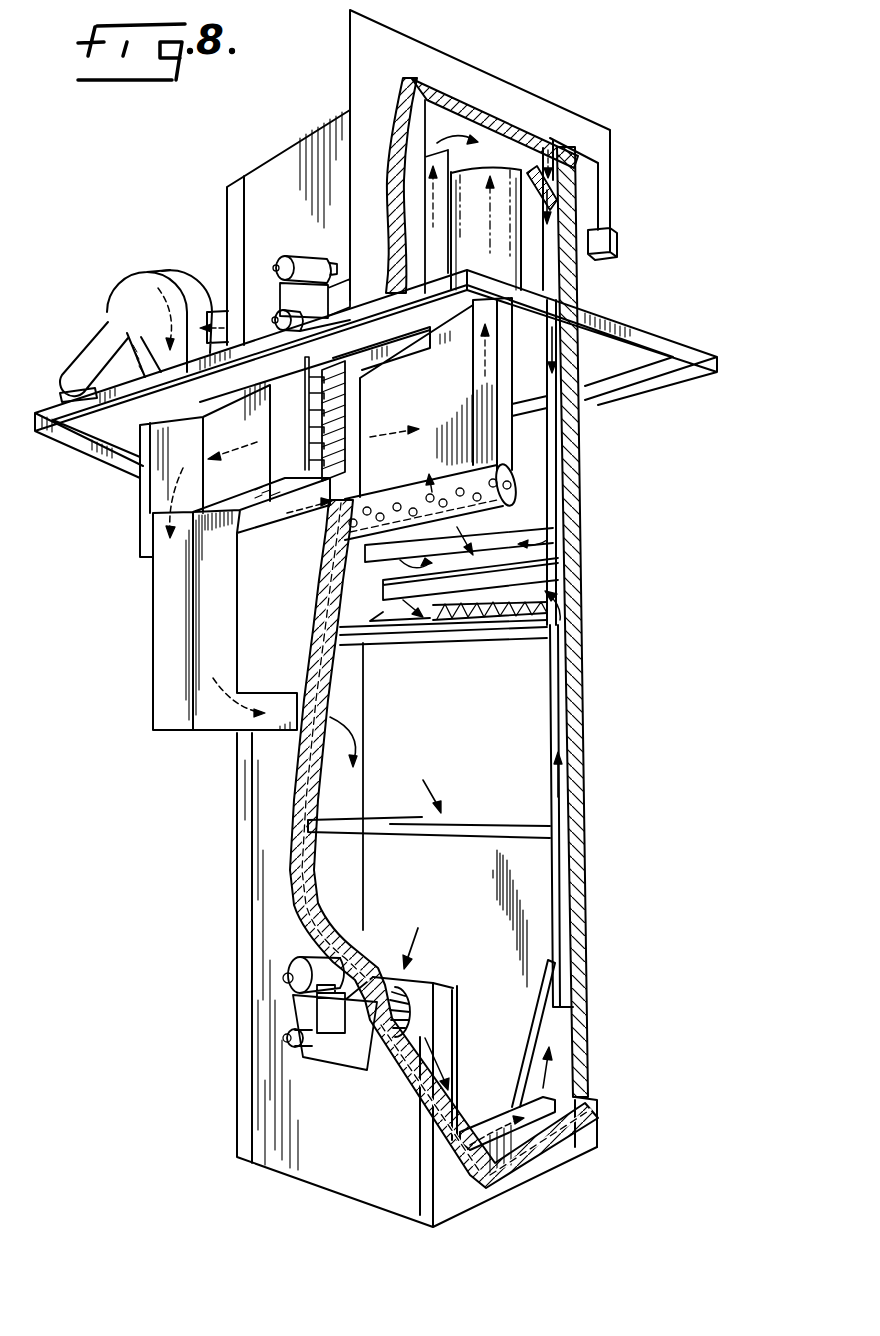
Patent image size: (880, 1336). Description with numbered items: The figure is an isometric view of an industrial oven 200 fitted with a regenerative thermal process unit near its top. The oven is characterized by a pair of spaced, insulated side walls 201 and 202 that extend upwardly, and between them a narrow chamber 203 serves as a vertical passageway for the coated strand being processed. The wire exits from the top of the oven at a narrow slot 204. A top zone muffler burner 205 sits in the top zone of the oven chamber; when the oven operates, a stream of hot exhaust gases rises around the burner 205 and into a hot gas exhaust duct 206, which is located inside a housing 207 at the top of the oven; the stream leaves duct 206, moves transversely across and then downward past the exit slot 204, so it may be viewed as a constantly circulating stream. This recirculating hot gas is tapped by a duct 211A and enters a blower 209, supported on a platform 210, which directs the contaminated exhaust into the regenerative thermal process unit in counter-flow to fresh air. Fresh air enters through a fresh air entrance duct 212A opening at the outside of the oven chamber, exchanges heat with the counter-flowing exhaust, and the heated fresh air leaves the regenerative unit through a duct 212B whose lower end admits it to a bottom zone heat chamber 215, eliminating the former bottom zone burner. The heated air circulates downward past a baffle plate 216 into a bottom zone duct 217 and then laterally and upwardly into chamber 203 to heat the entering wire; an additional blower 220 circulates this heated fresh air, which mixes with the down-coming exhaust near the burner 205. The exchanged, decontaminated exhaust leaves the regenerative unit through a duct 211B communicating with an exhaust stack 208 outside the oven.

The oven 200 is at (597, 634).
The side wall 201 is at (262, 926).
The side wall 202 is at (585, 862).
The narrow chamber 203 is at (556, 718).
The narrow slot 204 is at (556, 188).
The top zone muffler burner 205 is at (514, 494).
The hot gas exhaust duct 206 is at (421, 140).
The housing 207 is at (290, 158).
The exhaust stack 208 is at (503, 263).
The blower 209 is at (113, 290).
The platform 210 is at (687, 347).
The duct 211A is at (218, 310).
The duct 211B is at (515, 438).
The fresh air entrance duct 212A is at (346, 408).
The duct 212B is at (172, 634).
The bottom zone heat chamber 215 is at (343, 782).
The baffle plate 216 is at (338, 823).
The bottom zone duct 217 is at (455, 1033).
The additional blower 220 is at (398, 998).